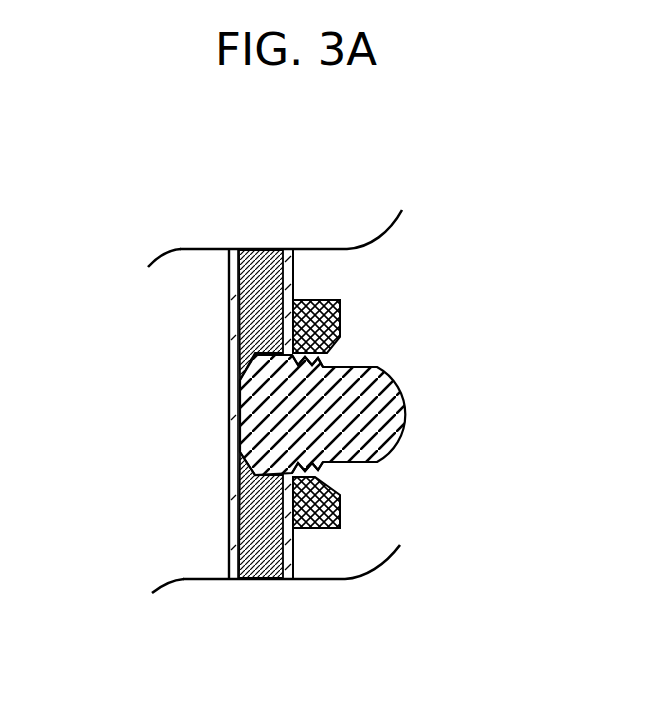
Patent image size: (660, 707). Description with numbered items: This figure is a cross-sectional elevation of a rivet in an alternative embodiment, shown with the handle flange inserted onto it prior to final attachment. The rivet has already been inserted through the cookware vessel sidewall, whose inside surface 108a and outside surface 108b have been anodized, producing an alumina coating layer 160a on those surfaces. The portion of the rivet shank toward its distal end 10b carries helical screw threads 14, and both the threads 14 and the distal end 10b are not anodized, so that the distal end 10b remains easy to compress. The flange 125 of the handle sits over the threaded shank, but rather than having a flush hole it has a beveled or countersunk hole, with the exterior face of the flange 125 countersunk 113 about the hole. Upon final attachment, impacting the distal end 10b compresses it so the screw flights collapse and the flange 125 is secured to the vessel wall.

The inside surface 108a is at (220, 310).
The outside surface 108b is at (313, 275).
The flange 125 is at (348, 318).
The helical screw threads 14 is at (333, 357).
The distal end of rivet 10b is at (413, 413).
The countersink 113 is at (340, 478).
The alumina coating layer 160a is at (224, 435).